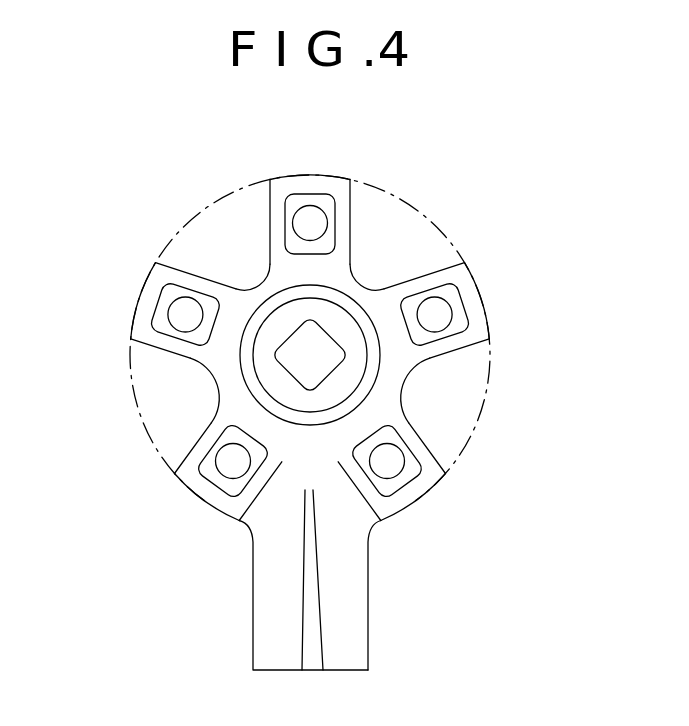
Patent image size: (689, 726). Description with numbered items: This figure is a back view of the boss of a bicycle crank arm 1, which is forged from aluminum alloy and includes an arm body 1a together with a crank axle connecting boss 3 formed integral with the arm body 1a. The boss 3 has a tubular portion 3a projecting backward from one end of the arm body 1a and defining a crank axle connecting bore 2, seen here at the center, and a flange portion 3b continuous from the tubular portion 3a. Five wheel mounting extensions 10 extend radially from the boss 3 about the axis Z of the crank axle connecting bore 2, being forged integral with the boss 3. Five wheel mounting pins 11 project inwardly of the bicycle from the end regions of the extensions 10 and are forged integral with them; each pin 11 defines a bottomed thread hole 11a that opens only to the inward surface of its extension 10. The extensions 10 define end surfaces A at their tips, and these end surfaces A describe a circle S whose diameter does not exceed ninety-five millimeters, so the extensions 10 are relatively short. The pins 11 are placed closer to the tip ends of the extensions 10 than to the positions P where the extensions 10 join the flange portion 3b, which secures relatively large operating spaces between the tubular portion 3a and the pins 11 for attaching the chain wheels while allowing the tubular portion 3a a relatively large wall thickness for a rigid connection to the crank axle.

The bicycle crank arm 1 is at (252, 585).
The arm body 1a is at (360, 601).
The crank axle connecting bore 2 is at (299, 386).
The crank axle connecting boss 3 is at (241, 152).
The tubular portion 3a is at (281, 288).
The flange portion 3b is at (351, 275).
The wheel mounting extensions 10 is at (160, 270).
The wheel mounting pins 11 is at (160, 323).
The bottomed thread hole 11a is at (184, 328).
The end surfaces A is at (143, 296).
The positions P is at (247, 284).
The circle S is at (418, 208).
The axis Z is at (308, 353).